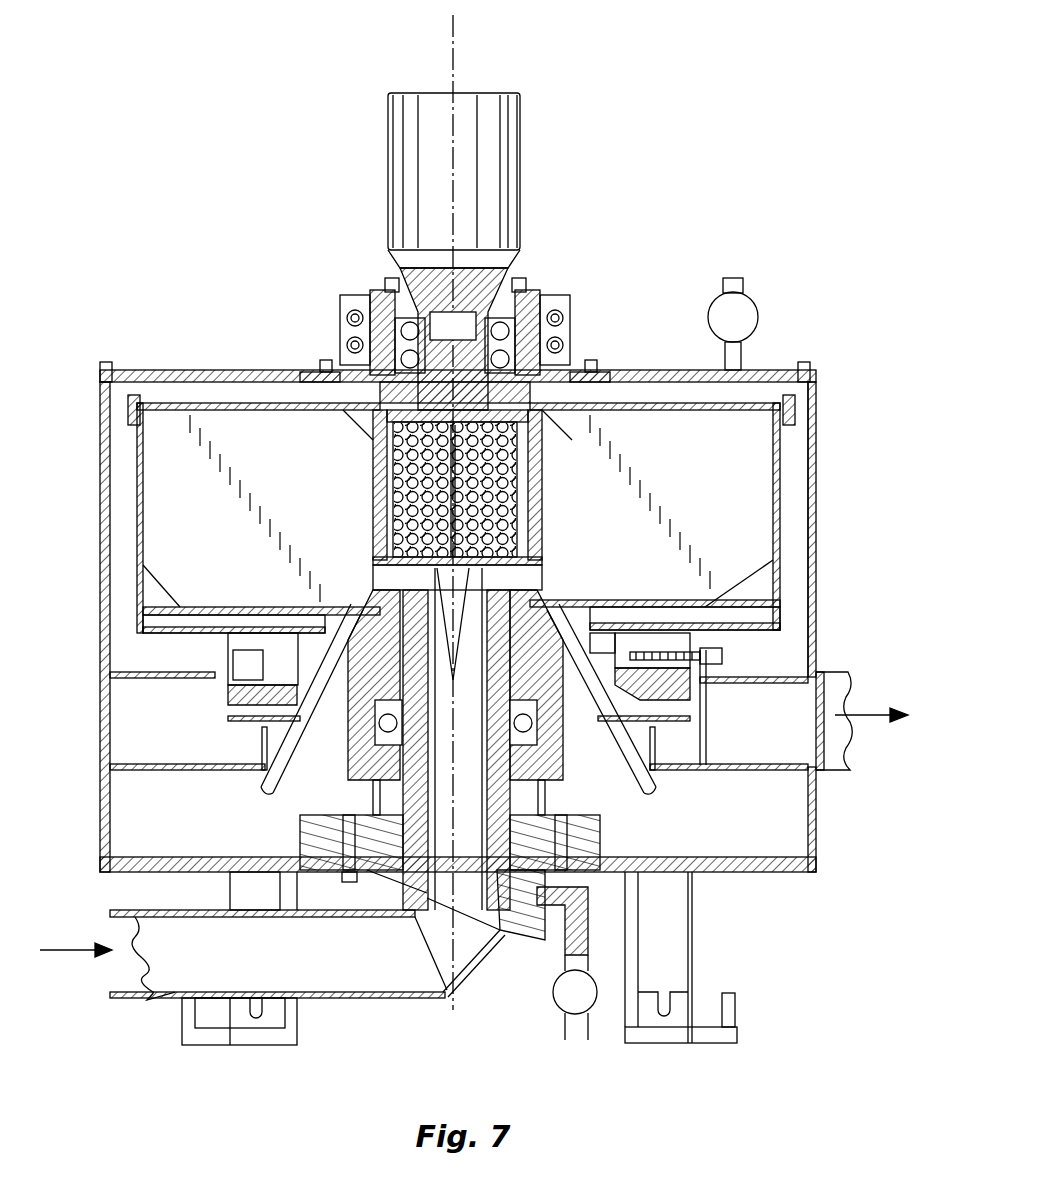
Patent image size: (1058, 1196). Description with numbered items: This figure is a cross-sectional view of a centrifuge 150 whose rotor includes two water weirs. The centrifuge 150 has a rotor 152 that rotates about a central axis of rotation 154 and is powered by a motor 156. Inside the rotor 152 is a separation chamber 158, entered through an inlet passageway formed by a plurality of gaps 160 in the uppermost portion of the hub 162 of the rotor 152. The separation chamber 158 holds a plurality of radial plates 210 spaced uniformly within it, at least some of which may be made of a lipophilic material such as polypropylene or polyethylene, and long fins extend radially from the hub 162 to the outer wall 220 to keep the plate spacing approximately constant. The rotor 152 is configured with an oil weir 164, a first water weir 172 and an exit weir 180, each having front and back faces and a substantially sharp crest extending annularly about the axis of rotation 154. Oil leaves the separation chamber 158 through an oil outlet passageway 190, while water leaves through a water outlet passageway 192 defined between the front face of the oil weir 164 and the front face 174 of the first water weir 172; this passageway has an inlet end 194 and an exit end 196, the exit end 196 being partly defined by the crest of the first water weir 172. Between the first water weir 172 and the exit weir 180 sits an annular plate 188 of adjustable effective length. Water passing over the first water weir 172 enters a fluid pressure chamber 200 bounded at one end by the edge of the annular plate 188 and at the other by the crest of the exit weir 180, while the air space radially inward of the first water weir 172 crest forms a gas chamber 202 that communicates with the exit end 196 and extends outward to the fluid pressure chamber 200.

The centrifuge 150 is at (724, 235).
The rotor 152 is at (795, 466).
The central axis of rotation 154 is at (453, 45).
The motor 156 is at (490, 150).
The separation chamber 158 is at (662, 502).
The gaps 160 is at (540, 433).
The hub 162 is at (542, 490).
The oil weir 164 is at (378, 603).
The first water weir 172 is at (282, 732).
The front face 174 is at (250, 607).
The exit weir 180 is at (268, 705).
The annular plate 188 is at (262, 645).
The oil outlet passageway 190 is at (548, 600).
The water outlet passageway 192 is at (715, 628).
The inlet end 194 is at (700, 612).
The exit end 196 is at (590, 583).
The fluid pressure chamber 200 is at (722, 653).
The gas chamber 202 is at (612, 652).
The radial plates 210 is at (795, 420).
The outer wall 220 is at (782, 503).